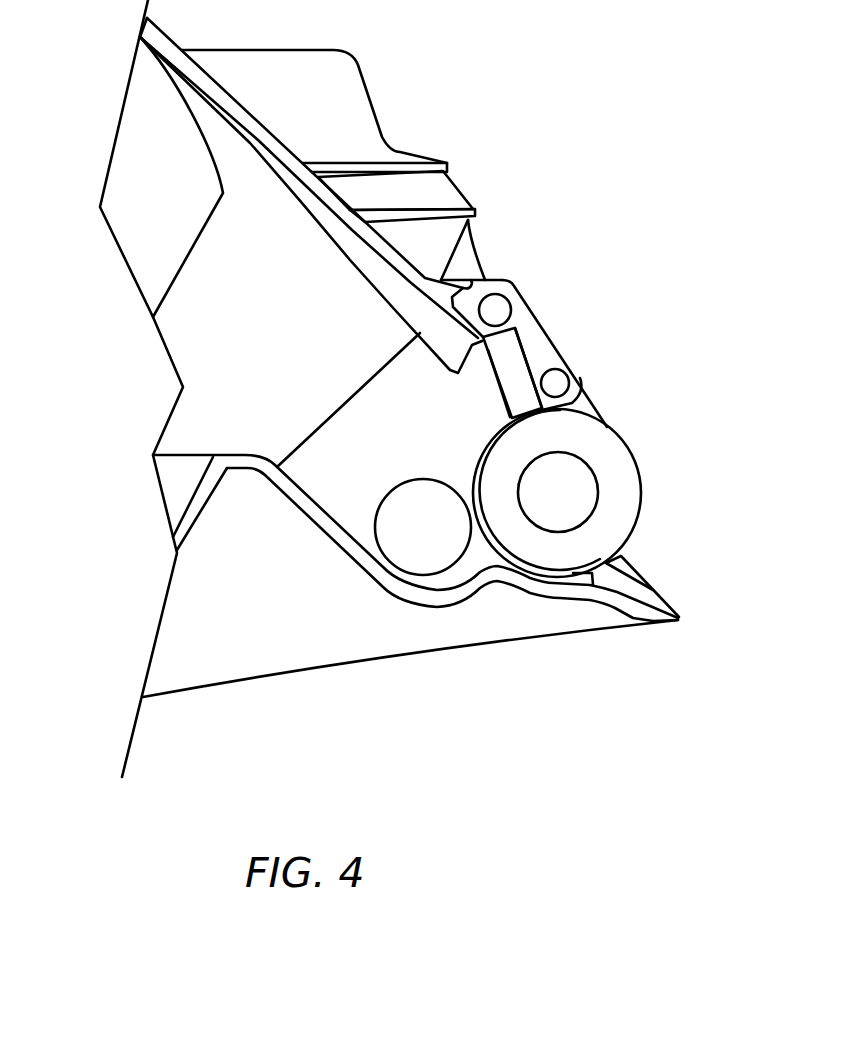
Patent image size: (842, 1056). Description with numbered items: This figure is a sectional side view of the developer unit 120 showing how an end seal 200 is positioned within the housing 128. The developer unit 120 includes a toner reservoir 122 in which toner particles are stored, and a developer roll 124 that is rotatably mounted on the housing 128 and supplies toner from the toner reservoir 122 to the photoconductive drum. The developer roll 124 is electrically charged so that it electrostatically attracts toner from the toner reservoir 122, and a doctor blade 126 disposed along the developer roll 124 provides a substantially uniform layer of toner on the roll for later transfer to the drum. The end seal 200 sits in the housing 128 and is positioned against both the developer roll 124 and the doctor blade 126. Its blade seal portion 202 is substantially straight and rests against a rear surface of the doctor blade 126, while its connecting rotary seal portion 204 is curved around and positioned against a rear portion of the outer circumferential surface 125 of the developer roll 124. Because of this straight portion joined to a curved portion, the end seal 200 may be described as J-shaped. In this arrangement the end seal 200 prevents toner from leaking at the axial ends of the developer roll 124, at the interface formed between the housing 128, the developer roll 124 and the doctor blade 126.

The developer unit 120 is at (562, 128).
The toner reservoir 122 is at (350, 487).
The developer roll 124 is at (642, 493).
The outer circumferential surface 125 is at (477, 463).
The doctor blade 126 is at (530, 365).
The housing 128 is at (582, 373).
The end seal 200 is at (497, 435).
The blade seal portion 202 is at (503, 392).
The rotary seal portion 204 is at (490, 542).